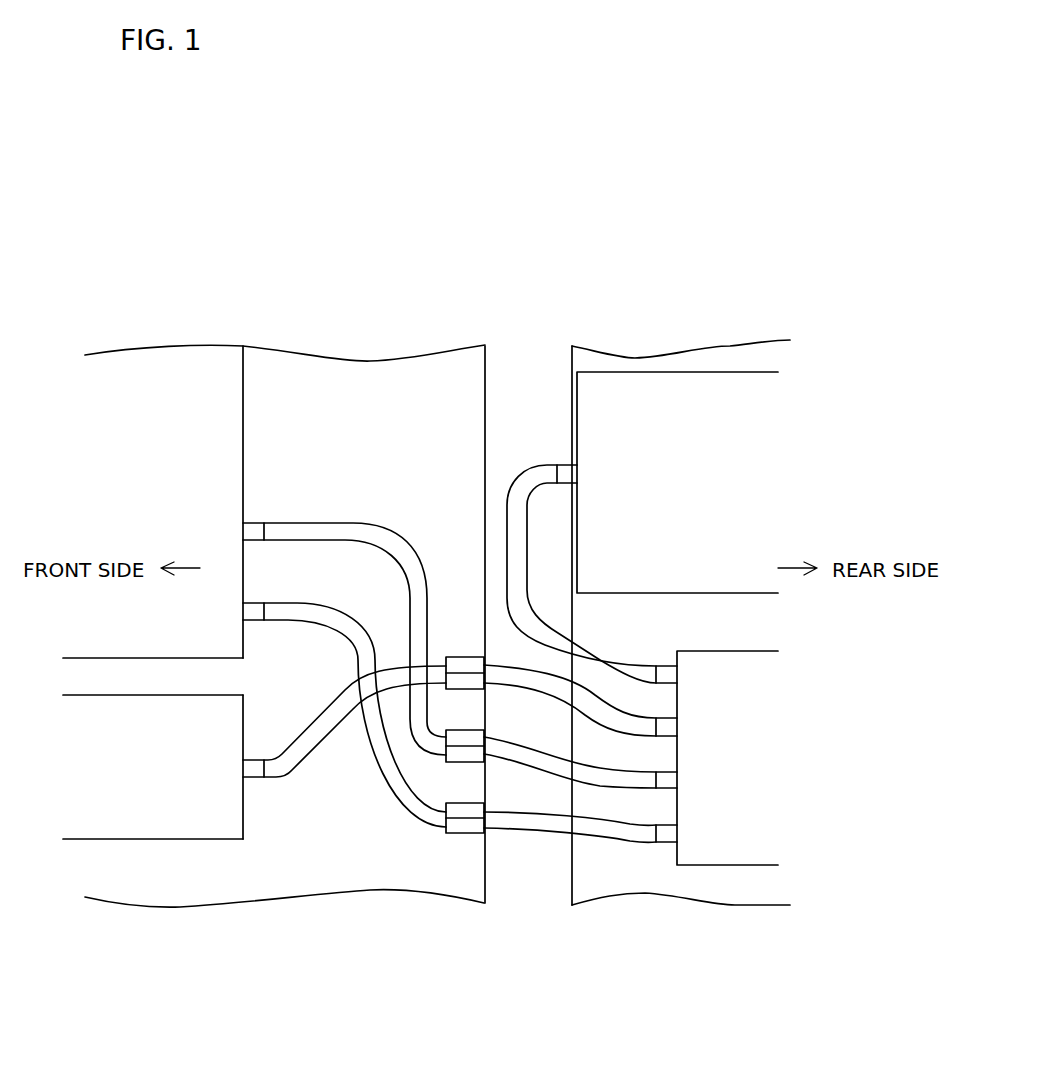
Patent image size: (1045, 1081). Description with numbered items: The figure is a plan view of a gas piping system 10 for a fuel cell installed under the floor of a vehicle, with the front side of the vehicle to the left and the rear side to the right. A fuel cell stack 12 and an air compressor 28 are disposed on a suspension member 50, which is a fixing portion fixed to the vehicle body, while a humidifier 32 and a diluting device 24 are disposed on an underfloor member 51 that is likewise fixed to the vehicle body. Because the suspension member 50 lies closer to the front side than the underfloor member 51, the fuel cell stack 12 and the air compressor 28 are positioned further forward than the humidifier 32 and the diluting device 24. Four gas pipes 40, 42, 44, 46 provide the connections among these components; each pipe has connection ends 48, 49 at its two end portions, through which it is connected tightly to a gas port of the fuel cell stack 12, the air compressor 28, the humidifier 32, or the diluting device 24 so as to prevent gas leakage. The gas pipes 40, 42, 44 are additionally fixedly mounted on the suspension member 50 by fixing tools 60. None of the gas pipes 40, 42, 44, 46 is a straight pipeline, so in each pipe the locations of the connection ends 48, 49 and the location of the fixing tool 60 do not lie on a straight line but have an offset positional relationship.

The gas piping system for a fuel cell 10 is at (349, 921).
The fuel cell stack 12 is at (235, 414).
The diluting device 24 is at (598, 401).
The air compressor 28 is at (232, 822).
The humidifier 32 is at (726, 852).
The gas pipe 40 is at (304, 740).
The gas pipe 42 is at (340, 527).
The gas pipe 44 is at (318, 617).
The gas pipe 46 is at (532, 477).
The connection end 48 is at (258, 528).
The connection end 49 is at (668, 680).
The suspension member 50 is at (416, 383).
The underfloor member 51 is at (739, 360).
The fixing tool 60 is at (470, 637).